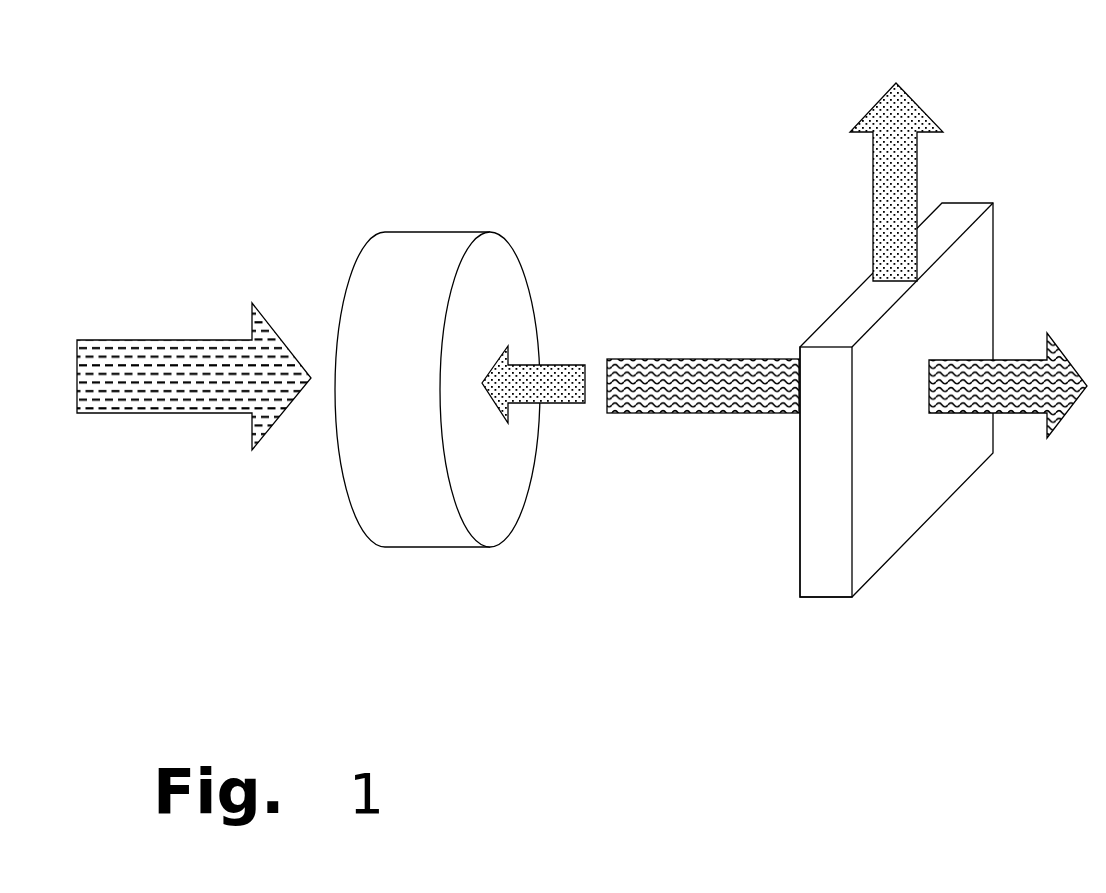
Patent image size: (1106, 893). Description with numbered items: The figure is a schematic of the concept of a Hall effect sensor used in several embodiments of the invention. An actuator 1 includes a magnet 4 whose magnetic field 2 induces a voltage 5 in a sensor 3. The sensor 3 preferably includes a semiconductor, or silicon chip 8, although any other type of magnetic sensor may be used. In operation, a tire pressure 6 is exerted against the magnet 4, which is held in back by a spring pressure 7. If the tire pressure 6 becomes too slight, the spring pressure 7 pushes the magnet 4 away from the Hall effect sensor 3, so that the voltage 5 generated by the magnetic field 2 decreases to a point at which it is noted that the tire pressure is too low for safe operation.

The actuator 1 is at (447, 198).
The magnetic field 2 is at (697, 387).
The sensor 3 is at (870, 465).
The magnet 4 is at (427, 502).
The voltage 5 is at (892, 177).
The tire pressure 6 is at (168, 408).
The spring pressure 7 is at (573, 378).
The silicon chip 8 is at (827, 477).